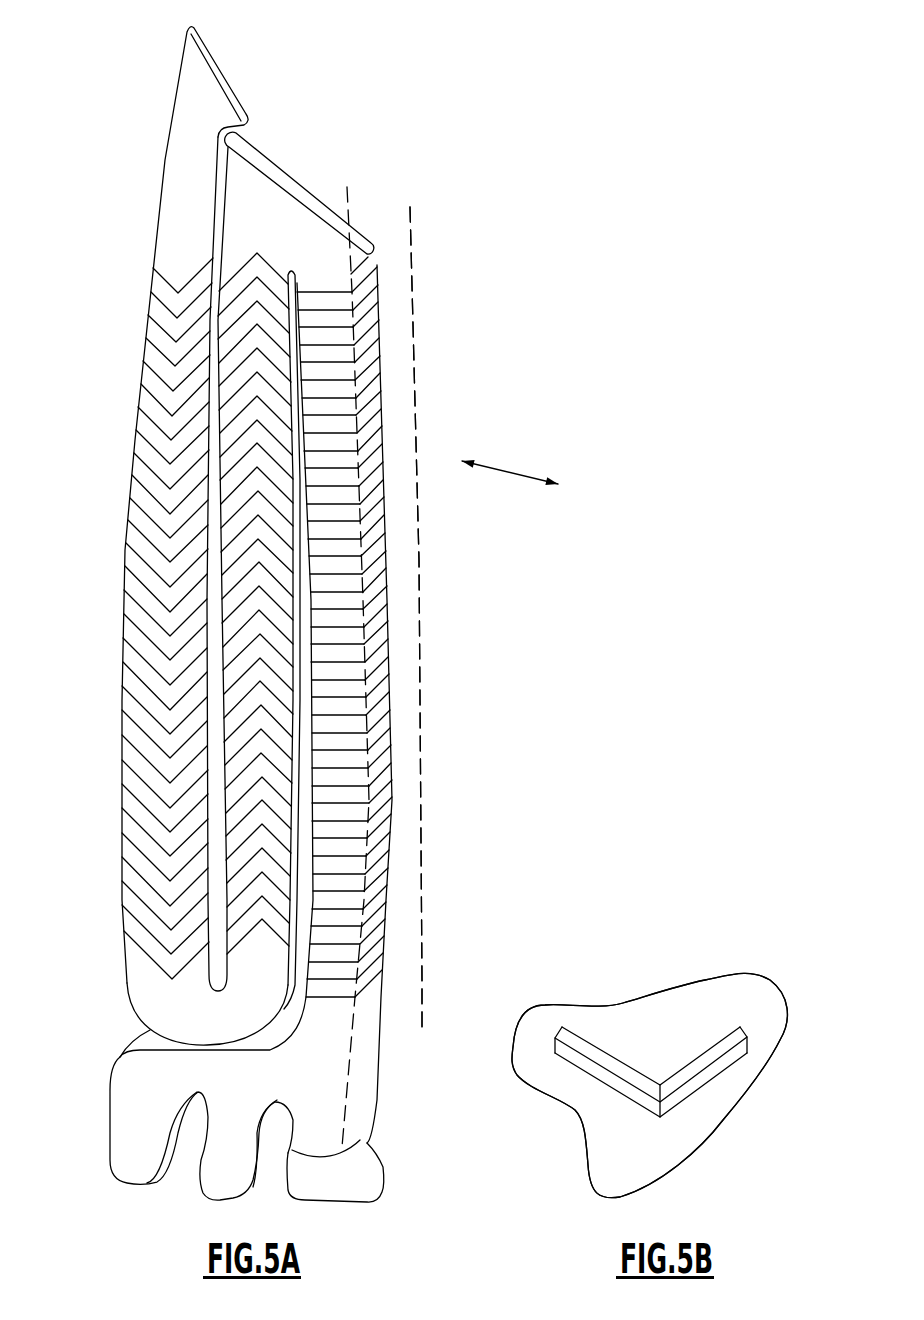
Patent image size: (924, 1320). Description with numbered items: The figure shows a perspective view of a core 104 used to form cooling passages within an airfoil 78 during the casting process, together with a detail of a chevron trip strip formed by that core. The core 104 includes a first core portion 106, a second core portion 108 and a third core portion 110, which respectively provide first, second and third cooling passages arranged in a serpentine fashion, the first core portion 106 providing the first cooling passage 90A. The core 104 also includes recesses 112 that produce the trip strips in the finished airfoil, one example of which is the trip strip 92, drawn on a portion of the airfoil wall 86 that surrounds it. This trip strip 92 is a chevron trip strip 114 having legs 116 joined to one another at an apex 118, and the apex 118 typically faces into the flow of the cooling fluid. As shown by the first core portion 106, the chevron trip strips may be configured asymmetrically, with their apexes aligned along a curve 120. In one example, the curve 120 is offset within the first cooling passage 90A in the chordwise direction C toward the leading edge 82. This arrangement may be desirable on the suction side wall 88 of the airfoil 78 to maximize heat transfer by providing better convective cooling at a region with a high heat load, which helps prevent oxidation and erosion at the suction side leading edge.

In FIG. 5A, the core 104 is at (308, 156).
In FIG. 5A, the third core portion 110 is at (130, 536).
In FIG. 5A, the second core portion 108 is at (275, 484).
In FIG. 5A, the recesses 112 is at (347, 771).
In FIG. 5A, the first cooling passage 90A is at (385, 342).
In FIG. 5A, the first core portion 106 is at (386, 606).
In FIG. 5A, the curve 120 is at (353, 198).
In FIG. 5A, the leading edge 82 is at (423, 635).
In FIG. 5A, the airfoil 78 is at (427, 761).
In FIG. 5A, the chordwise direction C is at (505, 468).
In FIG. 5A, the suction side wall 88 is at (400, 966).
In FIG. 5B, the ply material 86 is at (678, 998).
In FIG. 5B, the trip strip 92 is at (755, 1007).
In FIG. 5B, the chevron trip strip 114 is at (600, 1040).
In FIG. 5B, the legs 116 is at (590, 1060).
In FIG. 5B, the apex 118 is at (650, 1107).